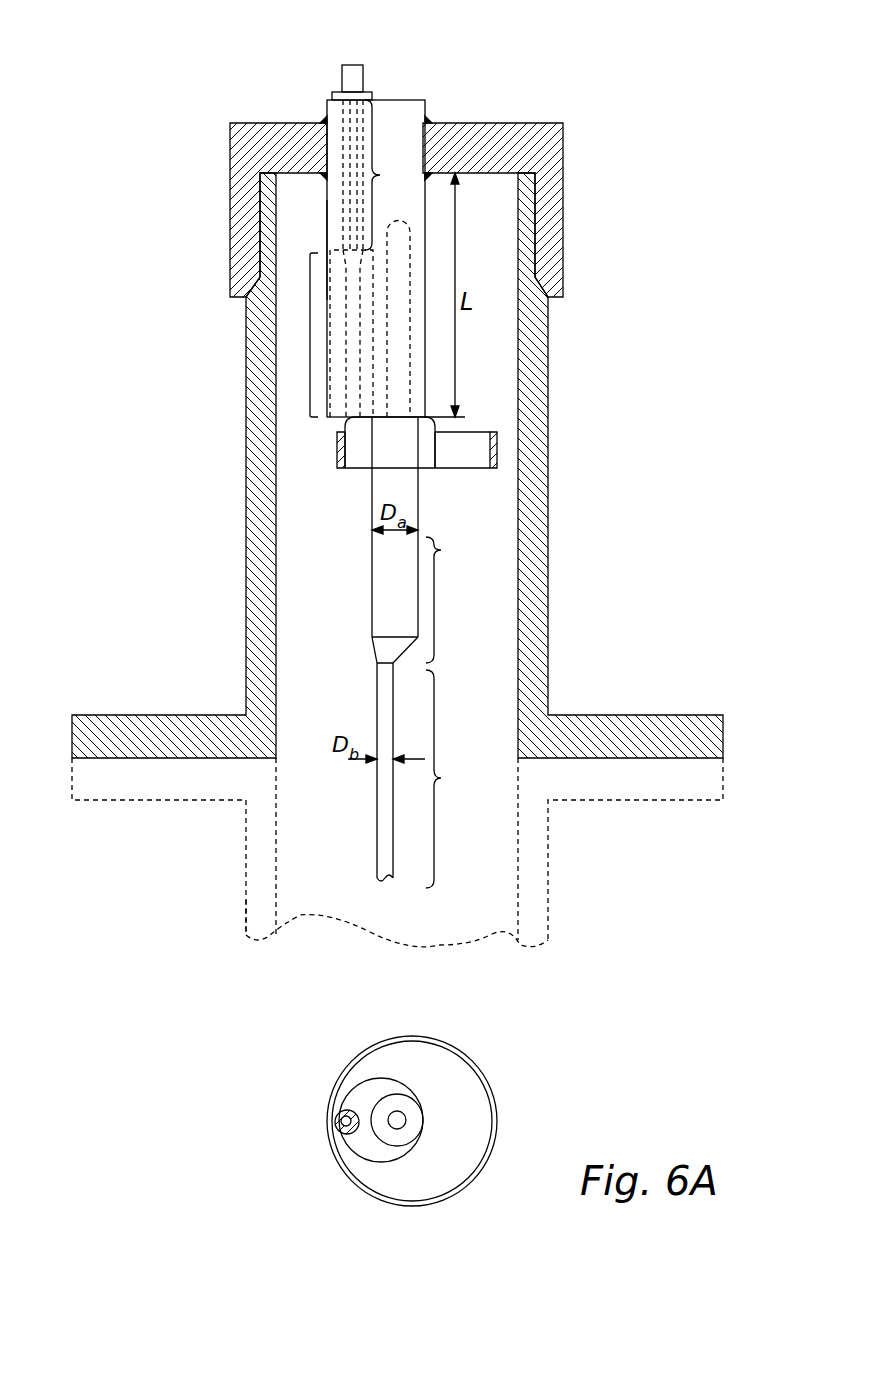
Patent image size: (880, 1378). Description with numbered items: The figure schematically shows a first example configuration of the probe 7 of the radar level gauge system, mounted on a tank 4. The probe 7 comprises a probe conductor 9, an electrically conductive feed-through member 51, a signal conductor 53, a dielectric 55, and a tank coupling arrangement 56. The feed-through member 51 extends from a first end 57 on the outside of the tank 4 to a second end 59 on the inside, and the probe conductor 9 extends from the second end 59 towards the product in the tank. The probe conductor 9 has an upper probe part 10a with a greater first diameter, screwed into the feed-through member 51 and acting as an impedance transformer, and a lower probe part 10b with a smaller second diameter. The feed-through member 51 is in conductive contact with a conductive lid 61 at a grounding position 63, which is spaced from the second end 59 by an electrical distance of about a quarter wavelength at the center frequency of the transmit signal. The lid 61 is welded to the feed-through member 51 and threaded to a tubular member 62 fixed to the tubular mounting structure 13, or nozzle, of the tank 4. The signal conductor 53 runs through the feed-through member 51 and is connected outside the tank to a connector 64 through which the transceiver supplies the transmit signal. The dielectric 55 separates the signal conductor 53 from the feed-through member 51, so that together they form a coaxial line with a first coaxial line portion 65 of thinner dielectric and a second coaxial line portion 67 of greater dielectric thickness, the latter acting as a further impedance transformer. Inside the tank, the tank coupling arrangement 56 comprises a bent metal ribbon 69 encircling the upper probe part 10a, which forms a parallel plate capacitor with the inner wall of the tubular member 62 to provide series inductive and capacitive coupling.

The tank 4 is at (170, 840).
The probe 7 is at (305, 457).
The probe conductor 9 is at (482, 645).
The upper probe part 10a is at (432, 599).
The lower probe part 10b is at (435, 775).
The tubular mounting structure 13 is at (252, 890).
The feed-through member 51 is at (327, 230).
The signal conductor 53 is at (350, 160).
The dielectric 55 is at (347, 240).
The tank coupling arrangement 56 is at (490, 482).
The first end 57 is at (393, 100).
The second end 59 is at (371, 420).
The conductive lid 61 is at (555, 123).
The tubular member 62 is at (246, 535).
The grounding position 63 is at (427, 175).
The connector 64 is at (353, 65).
The first coaxial line portion 65 is at (388, 175).
The second coaxial line portion 67 is at (310, 337).
The bent metal ribbon 69 is at (488, 432).